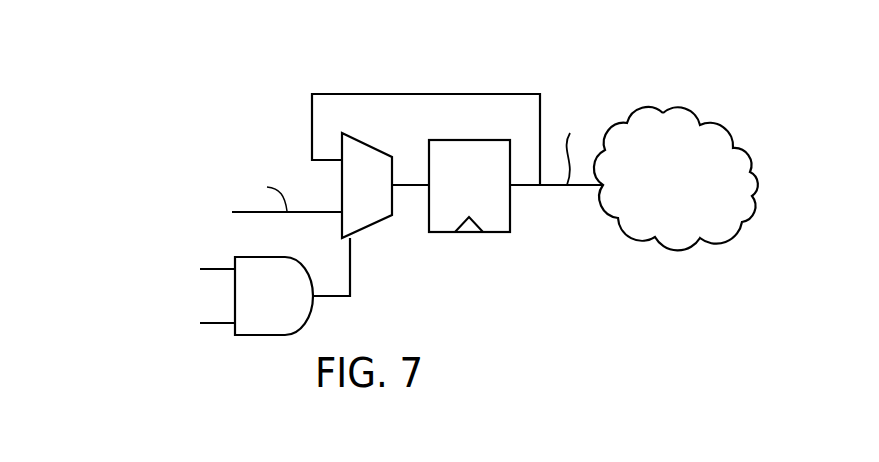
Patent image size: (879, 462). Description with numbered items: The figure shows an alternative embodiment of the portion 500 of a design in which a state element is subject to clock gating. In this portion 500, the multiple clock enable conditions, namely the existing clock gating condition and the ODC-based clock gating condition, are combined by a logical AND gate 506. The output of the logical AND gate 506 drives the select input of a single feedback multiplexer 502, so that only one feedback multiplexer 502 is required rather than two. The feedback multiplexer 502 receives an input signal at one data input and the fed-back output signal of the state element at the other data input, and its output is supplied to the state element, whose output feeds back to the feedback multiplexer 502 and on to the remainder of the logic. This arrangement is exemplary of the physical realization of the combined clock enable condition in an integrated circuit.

The portion of the design 500 is at (308, 62).
The feedback multiplexer 502 is at (388, 196).
The logical AND gate 506 is at (295, 304).